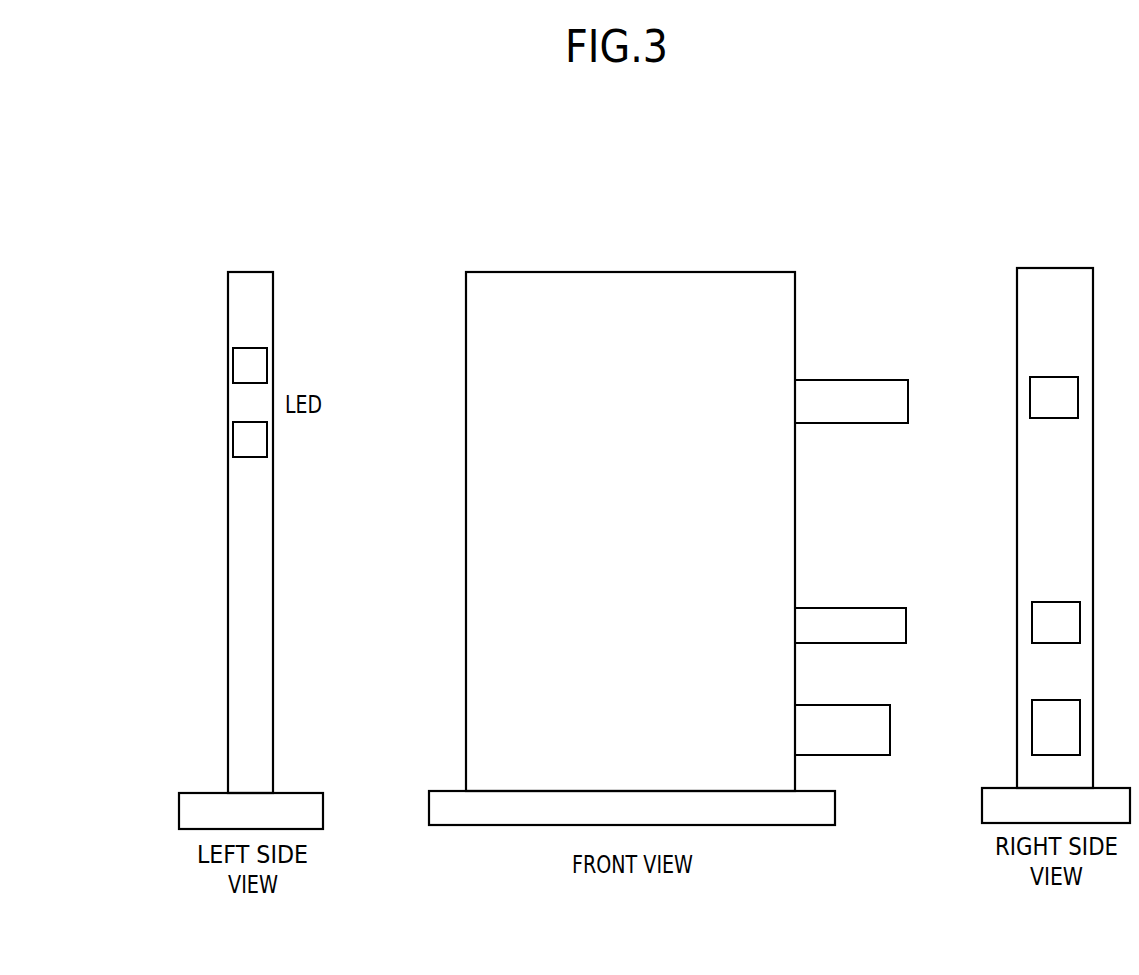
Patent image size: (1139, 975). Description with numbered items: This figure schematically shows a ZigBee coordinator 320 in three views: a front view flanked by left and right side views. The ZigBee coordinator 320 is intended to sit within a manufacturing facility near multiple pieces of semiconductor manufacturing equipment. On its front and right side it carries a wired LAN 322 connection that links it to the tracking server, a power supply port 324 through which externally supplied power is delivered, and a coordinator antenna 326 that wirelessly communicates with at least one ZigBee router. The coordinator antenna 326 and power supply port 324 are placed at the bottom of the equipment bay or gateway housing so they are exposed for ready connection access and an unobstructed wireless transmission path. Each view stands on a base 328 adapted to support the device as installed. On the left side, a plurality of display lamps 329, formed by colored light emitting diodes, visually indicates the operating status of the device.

The ZigBee coordinator 320 is at (250, 257).
The wired LAN connection 322 is at (1030, 395).
The power supply port 324 is at (1055, 602).
The coordinator antenna 326 is at (1055, 700).
The base 328 is at (192, 812).
The display lamps 329 is at (232, 363).